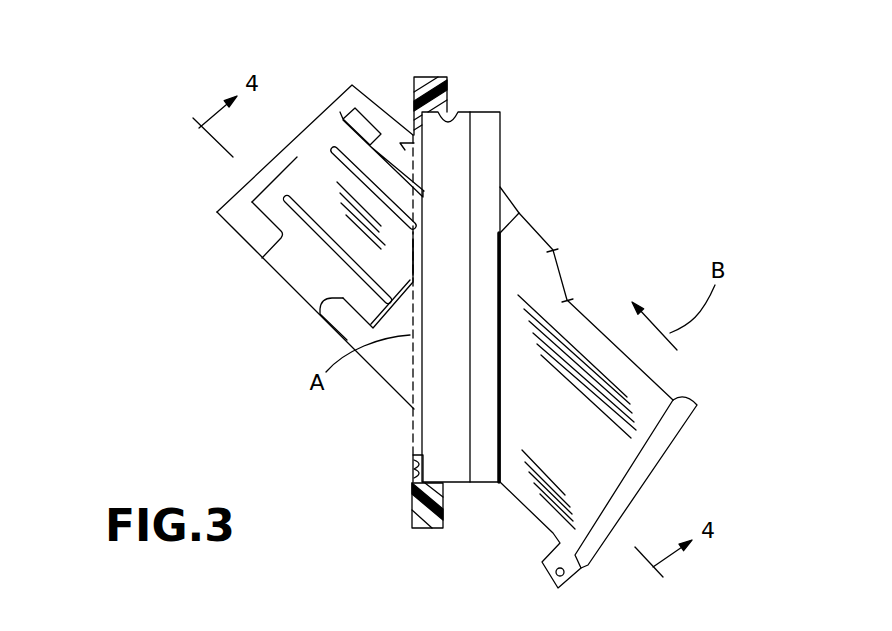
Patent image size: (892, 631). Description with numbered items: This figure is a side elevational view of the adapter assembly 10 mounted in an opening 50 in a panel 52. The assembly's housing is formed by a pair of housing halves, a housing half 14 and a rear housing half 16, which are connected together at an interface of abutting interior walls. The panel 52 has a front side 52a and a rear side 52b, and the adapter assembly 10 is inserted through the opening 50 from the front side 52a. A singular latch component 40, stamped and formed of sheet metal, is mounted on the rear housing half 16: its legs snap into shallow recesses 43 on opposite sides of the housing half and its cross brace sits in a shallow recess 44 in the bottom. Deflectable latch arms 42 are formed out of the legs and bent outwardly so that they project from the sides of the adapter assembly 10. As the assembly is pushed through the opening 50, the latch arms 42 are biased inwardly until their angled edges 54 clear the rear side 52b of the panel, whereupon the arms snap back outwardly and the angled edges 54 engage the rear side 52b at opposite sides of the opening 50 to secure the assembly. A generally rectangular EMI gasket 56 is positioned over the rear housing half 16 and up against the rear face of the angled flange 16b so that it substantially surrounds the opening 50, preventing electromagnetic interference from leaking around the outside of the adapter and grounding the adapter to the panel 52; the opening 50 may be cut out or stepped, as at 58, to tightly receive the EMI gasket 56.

The adapter assembly 10 is at (566, 213).
The housing half 14 is at (392, 358).
The rear housing half 16 is at (537, 288).
The angled flange 16b is at (482, 165).
The latch component 40 is at (253, 263).
The deflectable latch arms 42 is at (363, 250).
The shallow recesses 43 is at (313, 152).
The shallow recess 44 is at (318, 310).
The opening 50 is at (458, 110).
The panel 52 is at (430, 78).
The front side 52a is at (443, 495).
The rear side 52b is at (415, 101).
The angled edges 54 is at (423, 263).
The EMI gasket 56 is at (440, 423).
The stepped cut-out 58 is at (413, 470).